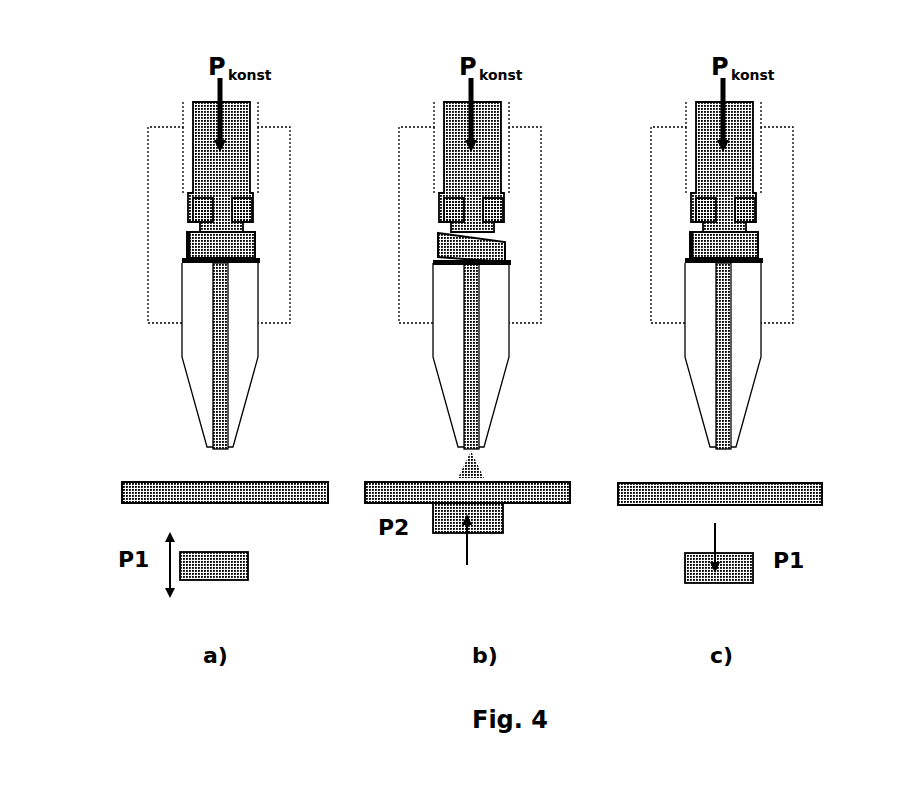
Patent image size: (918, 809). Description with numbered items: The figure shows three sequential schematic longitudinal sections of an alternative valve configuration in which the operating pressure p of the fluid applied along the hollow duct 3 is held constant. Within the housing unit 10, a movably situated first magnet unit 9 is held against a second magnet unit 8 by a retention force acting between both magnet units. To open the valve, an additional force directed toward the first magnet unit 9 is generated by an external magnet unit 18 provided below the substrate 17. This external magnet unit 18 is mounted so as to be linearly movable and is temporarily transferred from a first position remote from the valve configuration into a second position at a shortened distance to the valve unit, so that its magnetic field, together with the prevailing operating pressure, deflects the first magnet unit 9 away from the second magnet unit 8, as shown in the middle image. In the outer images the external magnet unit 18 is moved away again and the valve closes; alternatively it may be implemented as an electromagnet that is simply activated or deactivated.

The hollow duct 3 is at (202, 127).
The second magnet unit 8 is at (202, 208).
The first magnet unit 9 is at (217, 237).
The housing unit 10 is at (167, 285).
The substrate 17 is at (187, 493).
The external magnet unit 18 is at (445, 527).